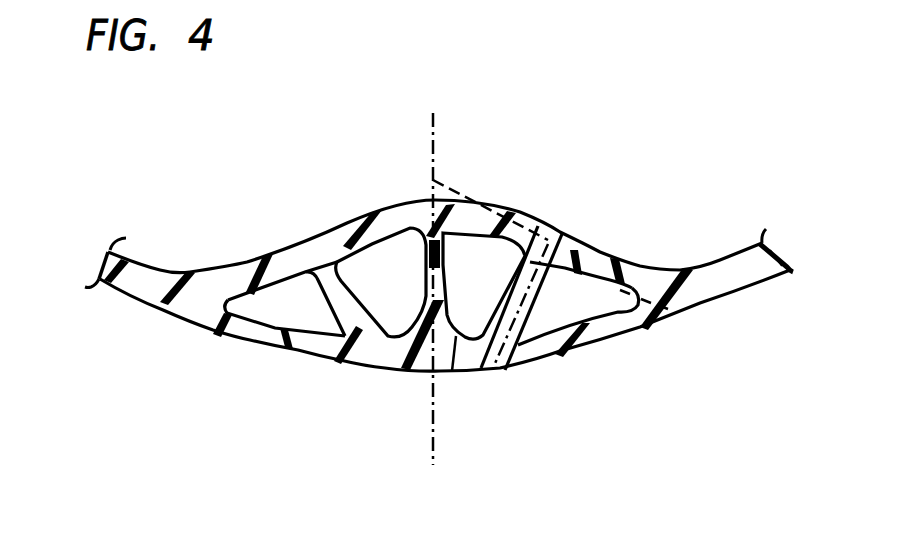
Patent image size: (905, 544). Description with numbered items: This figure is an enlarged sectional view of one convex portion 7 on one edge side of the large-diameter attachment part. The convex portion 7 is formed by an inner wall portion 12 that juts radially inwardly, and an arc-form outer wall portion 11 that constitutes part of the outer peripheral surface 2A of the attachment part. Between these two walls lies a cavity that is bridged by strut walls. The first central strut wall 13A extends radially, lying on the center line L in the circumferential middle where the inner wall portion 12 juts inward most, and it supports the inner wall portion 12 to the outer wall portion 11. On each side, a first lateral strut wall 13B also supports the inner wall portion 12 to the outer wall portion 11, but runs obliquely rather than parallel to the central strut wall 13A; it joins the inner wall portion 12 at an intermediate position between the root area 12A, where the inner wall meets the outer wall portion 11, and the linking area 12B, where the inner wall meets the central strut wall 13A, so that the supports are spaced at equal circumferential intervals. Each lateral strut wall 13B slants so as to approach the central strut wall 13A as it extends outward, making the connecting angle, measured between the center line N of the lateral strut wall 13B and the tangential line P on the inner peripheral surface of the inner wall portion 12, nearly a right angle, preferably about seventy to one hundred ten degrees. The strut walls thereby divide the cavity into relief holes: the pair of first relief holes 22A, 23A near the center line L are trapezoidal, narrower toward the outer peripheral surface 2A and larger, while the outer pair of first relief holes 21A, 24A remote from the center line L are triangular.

The convex portion 7 is at (360, 197).
The inner wall portion 12 is at (327, 227).
The root area 12A is at (203, 290).
The linking area 12B is at (440, 193).
The first central strut wall 13A is at (378, 338).
The first lateral strut wall 13B is at (378, 302).
The outer wall portion 11 is at (519, 362).
The first relief hole 21A is at (613, 330).
The first relief hole 22A is at (447, 335).
The first relief hole 23A is at (335, 360).
The first relief hole 24A is at (270, 300).
The outer peripheral surface 2A is at (405, 372).
The center line L is at (440, 125).
The center line of the lateral strut wall N is at (452, 372).
The tangential line P is at (716, 322).